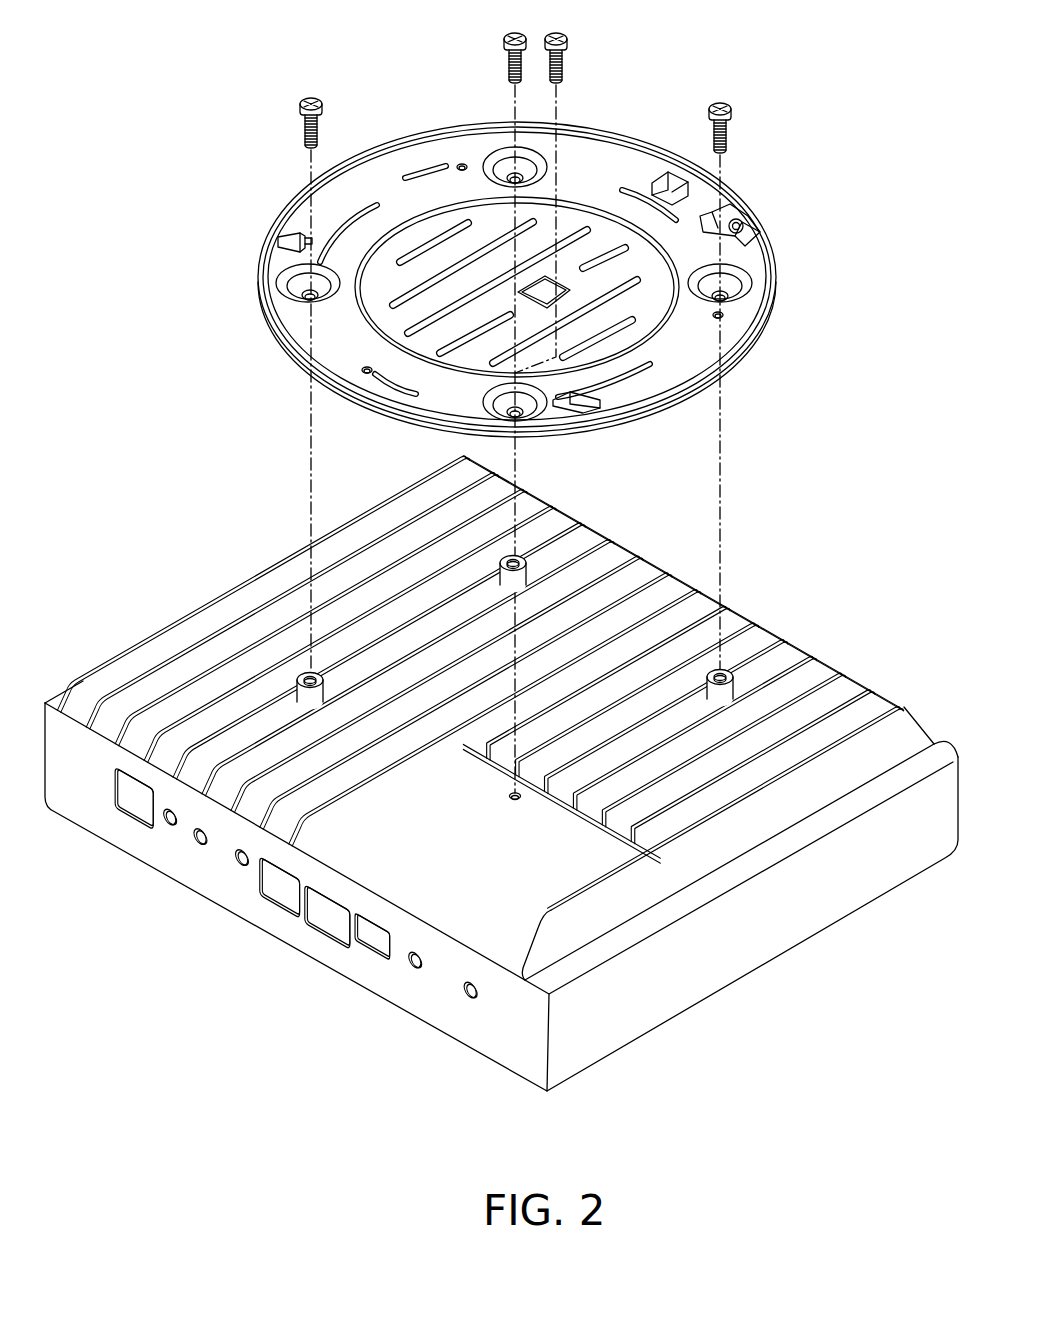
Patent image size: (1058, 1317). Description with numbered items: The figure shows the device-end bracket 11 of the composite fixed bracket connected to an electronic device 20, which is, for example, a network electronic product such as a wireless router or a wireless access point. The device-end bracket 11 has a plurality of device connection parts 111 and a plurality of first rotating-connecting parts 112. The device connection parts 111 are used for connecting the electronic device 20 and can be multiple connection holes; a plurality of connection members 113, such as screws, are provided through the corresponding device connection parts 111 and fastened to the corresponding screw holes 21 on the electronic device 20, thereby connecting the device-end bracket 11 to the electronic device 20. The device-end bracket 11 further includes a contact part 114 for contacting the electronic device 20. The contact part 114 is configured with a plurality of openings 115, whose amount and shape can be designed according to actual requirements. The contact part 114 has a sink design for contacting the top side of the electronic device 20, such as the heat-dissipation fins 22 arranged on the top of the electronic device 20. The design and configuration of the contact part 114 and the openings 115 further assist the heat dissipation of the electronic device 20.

The device-end bracket 11 is at (795, 223).
The device connection parts 111 is at (505, 172).
The first rotating-connecting parts 112 is at (292, 244).
The connection members 113 is at (568, 38).
The contact part 114 is at (385, 318).
The openings 115 is at (437, 243).
The electronic device 20 is at (838, 641).
The screw holes 21 is at (507, 556).
The heat-dissipation fins 22 is at (876, 705).